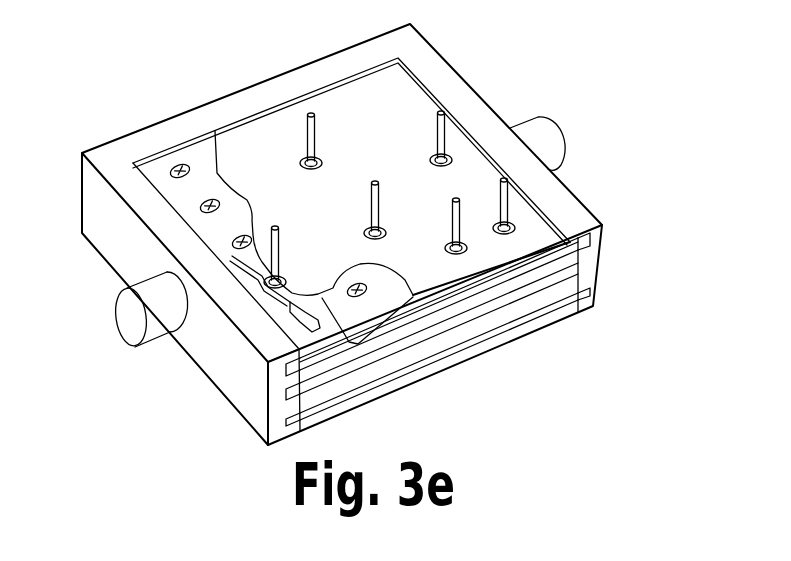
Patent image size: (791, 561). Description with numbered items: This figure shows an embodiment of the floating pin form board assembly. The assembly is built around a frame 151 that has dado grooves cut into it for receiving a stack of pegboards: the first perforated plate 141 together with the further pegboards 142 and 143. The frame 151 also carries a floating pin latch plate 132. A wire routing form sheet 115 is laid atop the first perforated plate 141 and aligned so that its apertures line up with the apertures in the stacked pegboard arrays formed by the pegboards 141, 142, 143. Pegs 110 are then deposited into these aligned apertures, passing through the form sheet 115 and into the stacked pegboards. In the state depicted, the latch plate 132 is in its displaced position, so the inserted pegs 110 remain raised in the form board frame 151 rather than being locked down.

The pegs 110 is at (363, 212).
The wire routing form sheet 115 is at (358, 123).
The first perforated plate 141 is at (197, 163).
The frame 151 is at (463, 78).
The floating pin latch plate 132 is at (597, 253).
The pegboard 142 is at (422, 340).
The pegboard 143 is at (487, 340).